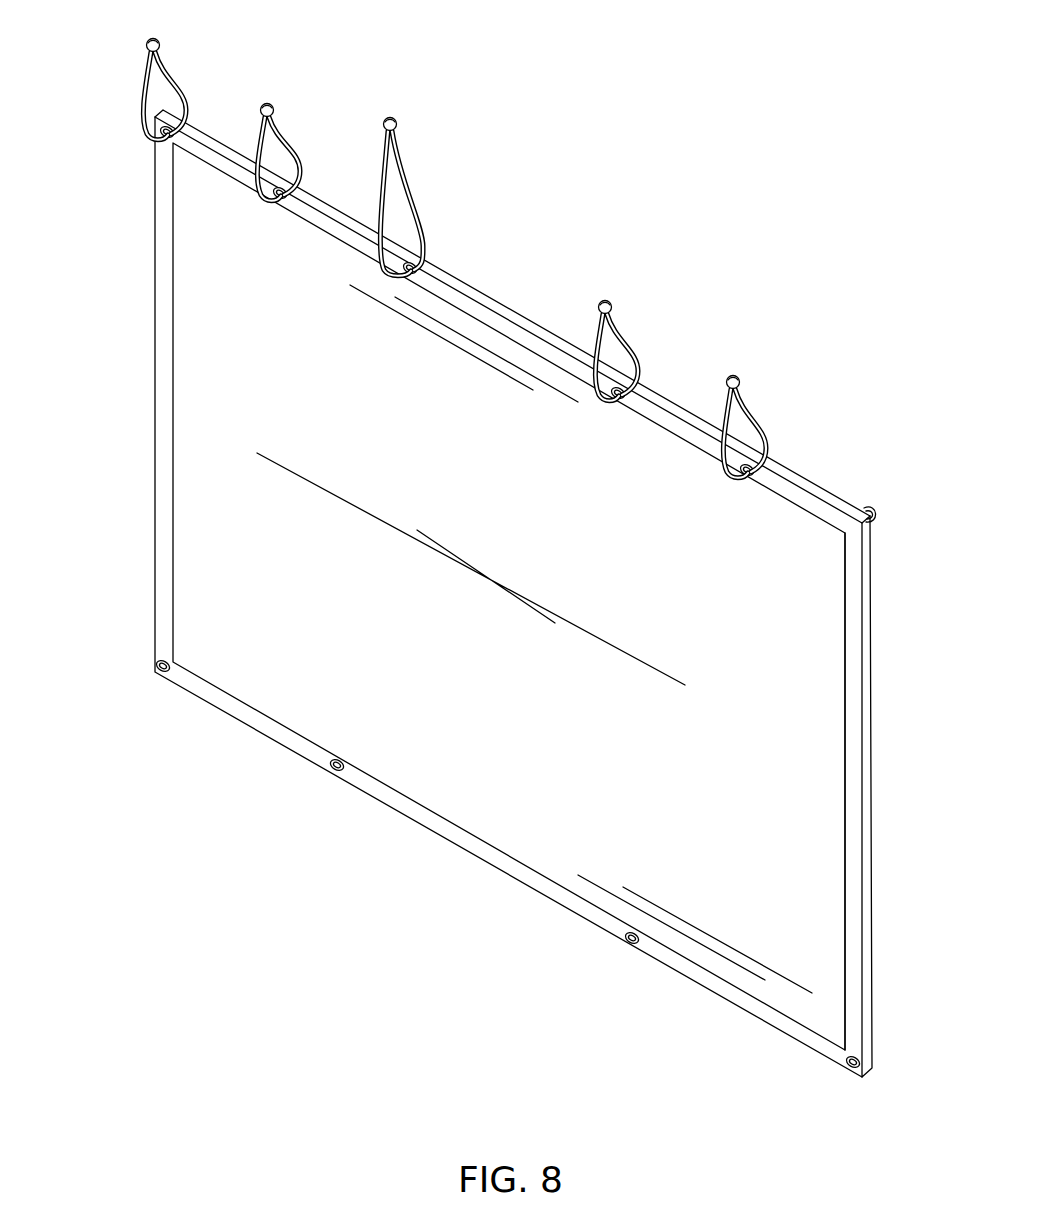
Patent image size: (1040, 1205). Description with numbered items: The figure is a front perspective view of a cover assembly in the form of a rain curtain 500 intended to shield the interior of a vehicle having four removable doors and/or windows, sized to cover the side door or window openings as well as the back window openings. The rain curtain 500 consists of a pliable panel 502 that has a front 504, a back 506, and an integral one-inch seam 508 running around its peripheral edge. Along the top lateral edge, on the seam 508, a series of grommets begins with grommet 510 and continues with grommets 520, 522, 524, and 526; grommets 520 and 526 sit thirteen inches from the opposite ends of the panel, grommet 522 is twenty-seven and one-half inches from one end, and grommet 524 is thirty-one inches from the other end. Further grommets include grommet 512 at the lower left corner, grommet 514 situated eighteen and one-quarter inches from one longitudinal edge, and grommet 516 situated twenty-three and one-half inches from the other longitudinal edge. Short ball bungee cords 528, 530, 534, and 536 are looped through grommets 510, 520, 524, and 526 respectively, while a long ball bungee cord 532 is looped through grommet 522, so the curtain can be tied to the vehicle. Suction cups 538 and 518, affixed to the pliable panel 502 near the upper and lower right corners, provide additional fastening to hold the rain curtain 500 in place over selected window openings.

The rain curtain 500 is at (598, 219).
The pliable panel 502 is at (880, 637).
The front 504 is at (830, 757).
The back 506 is at (841, 480).
The seam 508 is at (856, 890).
The grommet 510 is at (160, 138).
The grommet 512 is at (163, 672).
The grommet 514 is at (337, 770).
The grommet 516 is at (632, 945).
The suction cup 518 is at (852, 1068).
The grommet 520 is at (283, 185).
The grommet 522 is at (417, 262).
The grommet 524 is at (628, 390).
The grommet 526 is at (752, 465).
The short ball bungee cord 528 is at (147, 85).
The short ball bungee cord 530 is at (260, 140).
The long ball bungee cord 532 is at (400, 160).
The short ball bungee cord 534 is at (598, 320).
The short ball bungee cord 536 is at (722, 410).
The suction cup 538 is at (878, 510).